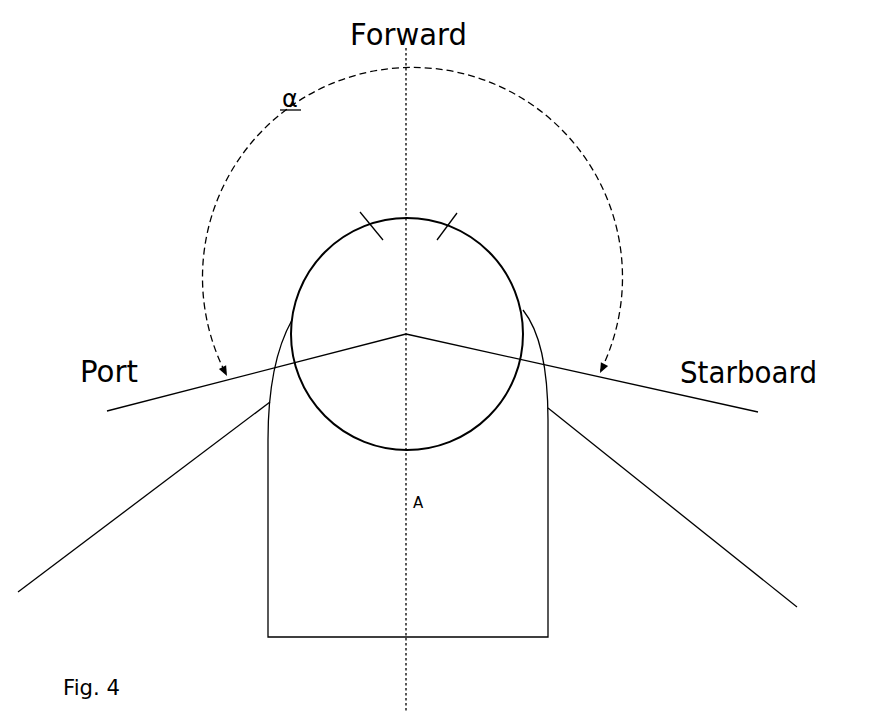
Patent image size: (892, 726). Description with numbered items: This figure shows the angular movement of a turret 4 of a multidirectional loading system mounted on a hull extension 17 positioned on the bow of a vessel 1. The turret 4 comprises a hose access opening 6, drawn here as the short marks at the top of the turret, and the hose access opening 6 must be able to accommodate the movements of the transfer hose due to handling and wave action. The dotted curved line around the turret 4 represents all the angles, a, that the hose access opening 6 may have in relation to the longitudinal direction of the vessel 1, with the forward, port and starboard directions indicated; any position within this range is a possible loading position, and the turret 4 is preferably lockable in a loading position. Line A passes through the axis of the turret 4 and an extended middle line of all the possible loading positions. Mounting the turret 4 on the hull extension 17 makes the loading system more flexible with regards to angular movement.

The vessel 1 is at (593, 532).
The turret 4 is at (458, 300).
The hose access opening 6 is at (432, 218).
The hull extension 17 is at (505, 433).